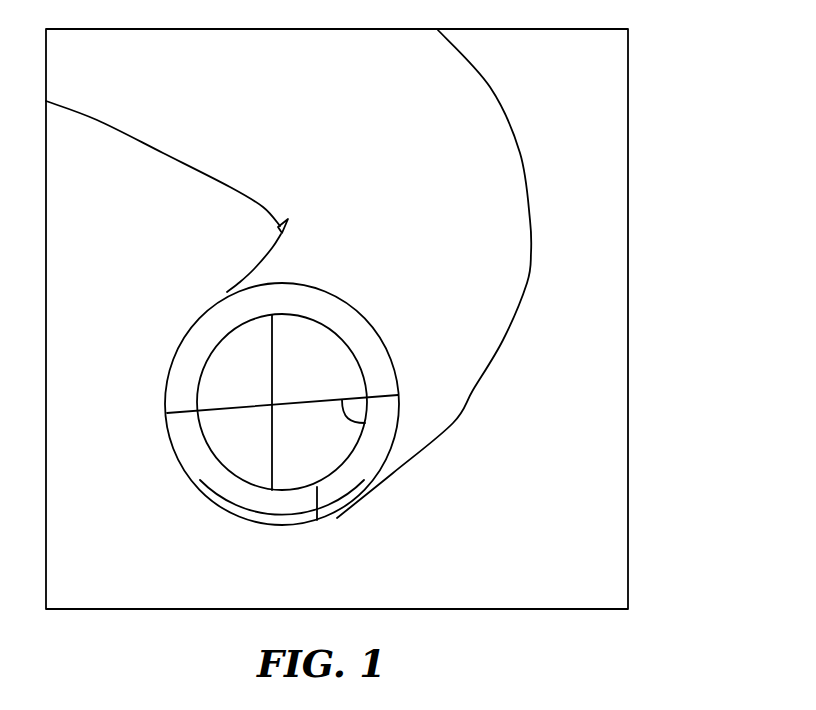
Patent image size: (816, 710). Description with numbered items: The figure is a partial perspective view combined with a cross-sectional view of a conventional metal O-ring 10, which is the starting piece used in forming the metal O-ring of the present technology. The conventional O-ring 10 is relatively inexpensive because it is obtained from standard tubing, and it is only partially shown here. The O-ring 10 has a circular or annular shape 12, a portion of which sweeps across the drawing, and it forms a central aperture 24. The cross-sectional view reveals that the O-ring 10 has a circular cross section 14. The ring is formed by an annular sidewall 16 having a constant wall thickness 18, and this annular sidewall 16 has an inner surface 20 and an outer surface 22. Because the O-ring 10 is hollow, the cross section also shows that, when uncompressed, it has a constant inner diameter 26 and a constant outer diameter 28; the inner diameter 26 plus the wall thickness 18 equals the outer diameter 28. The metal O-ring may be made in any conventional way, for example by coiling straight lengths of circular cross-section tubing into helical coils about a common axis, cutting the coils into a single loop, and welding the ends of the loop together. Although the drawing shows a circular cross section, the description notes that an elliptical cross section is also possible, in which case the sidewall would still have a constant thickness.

The conventional O-ring 10 is at (523, 279).
The circular or annular shape 12 is at (588, 120).
The circular cross section 14 is at (177, 360).
The annular sidewall 16 is at (377, 462).
The wall thickness 18 is at (318, 508).
The inner surface 20 is at (222, 430).
The outer surface 22 is at (247, 518).
The aperture 24 is at (100, 184).
The inner diameter 26 is at (268, 349).
The outer diameter 28 is at (365, 423).